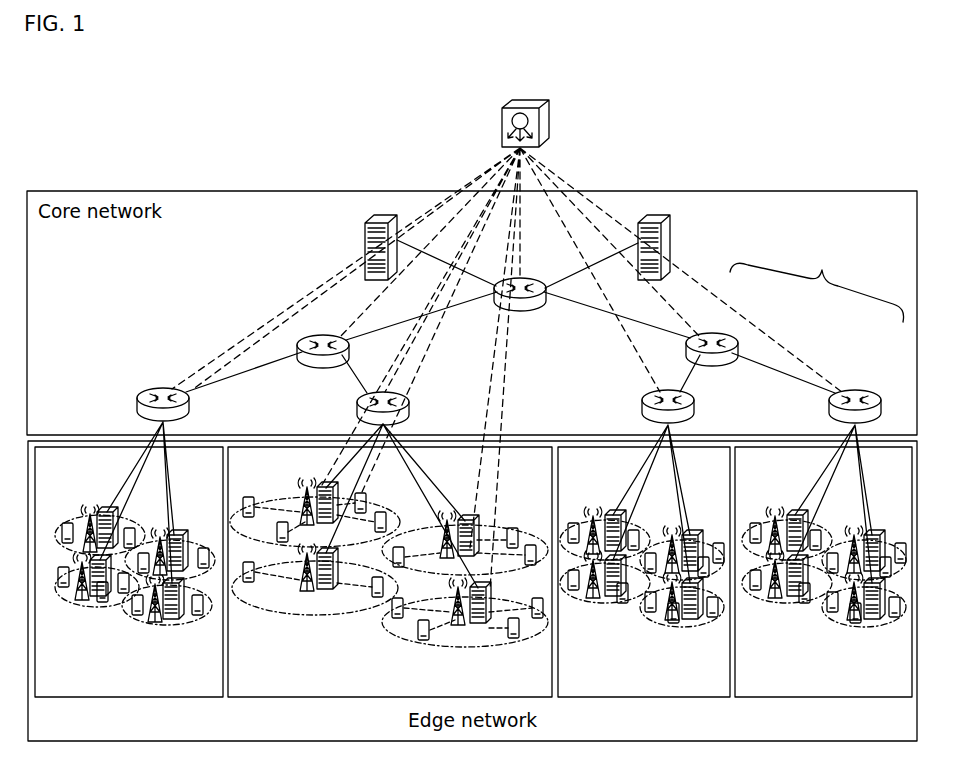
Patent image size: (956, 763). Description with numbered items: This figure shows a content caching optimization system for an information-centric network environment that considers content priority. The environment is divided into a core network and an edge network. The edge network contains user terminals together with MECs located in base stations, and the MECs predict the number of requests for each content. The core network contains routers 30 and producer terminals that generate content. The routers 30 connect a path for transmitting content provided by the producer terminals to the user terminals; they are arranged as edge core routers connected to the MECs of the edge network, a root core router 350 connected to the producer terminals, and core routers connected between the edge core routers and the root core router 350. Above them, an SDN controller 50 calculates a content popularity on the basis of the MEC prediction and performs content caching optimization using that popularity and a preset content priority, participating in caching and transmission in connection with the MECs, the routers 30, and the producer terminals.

The router 30 is at (817, 283).
The SDN controller 50 is at (531, 100).
The root core router 350 is at (546, 292).